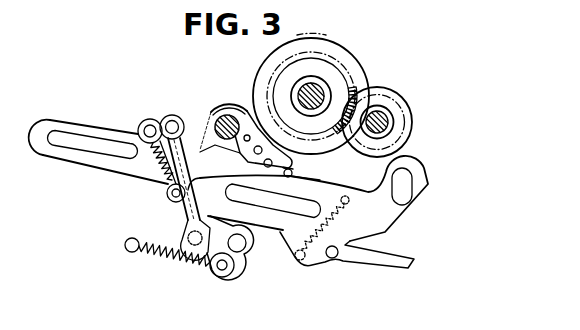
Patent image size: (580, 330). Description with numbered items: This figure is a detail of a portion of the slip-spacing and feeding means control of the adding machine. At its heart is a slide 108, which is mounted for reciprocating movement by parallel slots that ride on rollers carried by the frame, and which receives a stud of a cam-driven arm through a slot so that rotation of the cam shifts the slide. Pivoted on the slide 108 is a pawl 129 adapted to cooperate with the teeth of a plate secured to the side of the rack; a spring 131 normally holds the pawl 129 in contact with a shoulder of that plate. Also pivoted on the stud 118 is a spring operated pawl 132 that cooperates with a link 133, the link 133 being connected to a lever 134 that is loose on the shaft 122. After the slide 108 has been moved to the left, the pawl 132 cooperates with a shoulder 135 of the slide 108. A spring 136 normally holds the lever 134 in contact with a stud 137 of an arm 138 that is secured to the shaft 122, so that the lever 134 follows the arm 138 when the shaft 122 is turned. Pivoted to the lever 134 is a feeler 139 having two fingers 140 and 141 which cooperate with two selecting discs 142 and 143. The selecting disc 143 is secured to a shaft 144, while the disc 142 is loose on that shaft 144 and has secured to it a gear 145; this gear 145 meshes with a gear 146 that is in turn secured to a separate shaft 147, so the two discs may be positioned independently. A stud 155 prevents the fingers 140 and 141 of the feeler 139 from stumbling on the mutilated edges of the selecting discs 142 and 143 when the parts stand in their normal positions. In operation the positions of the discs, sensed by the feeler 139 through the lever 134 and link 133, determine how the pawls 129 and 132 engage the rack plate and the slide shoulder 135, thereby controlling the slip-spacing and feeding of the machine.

The slide 108 is at (417, 205).
The stud 118 is at (237, 252).
The shaft 122 is at (220, 110).
The pawl 129 is at (303, 267).
The spring 131 is at (336, 219).
The spring operated pawl 132 is at (233, 268).
The link 133 is at (185, 217).
The lever 134 is at (160, 119).
The shoulder 135 is at (223, 200).
The spring 136 is at (162, 170).
The stud 137 is at (205, 127).
The arm 138 is at (167, 197).
The feeler 139 is at (240, 167).
The finger 140 is at (248, 103).
The finger 141 is at (292, 165).
The selecting disc 142 is at (355, 60).
The selecting disc 143 is at (308, 32).
The shaft 144 is at (329, 88).
The gear 145 is at (388, 88).
The gear 146 is at (408, 110).
The shaft 147 is at (388, 126).
The stud 155 is at (312, 174).